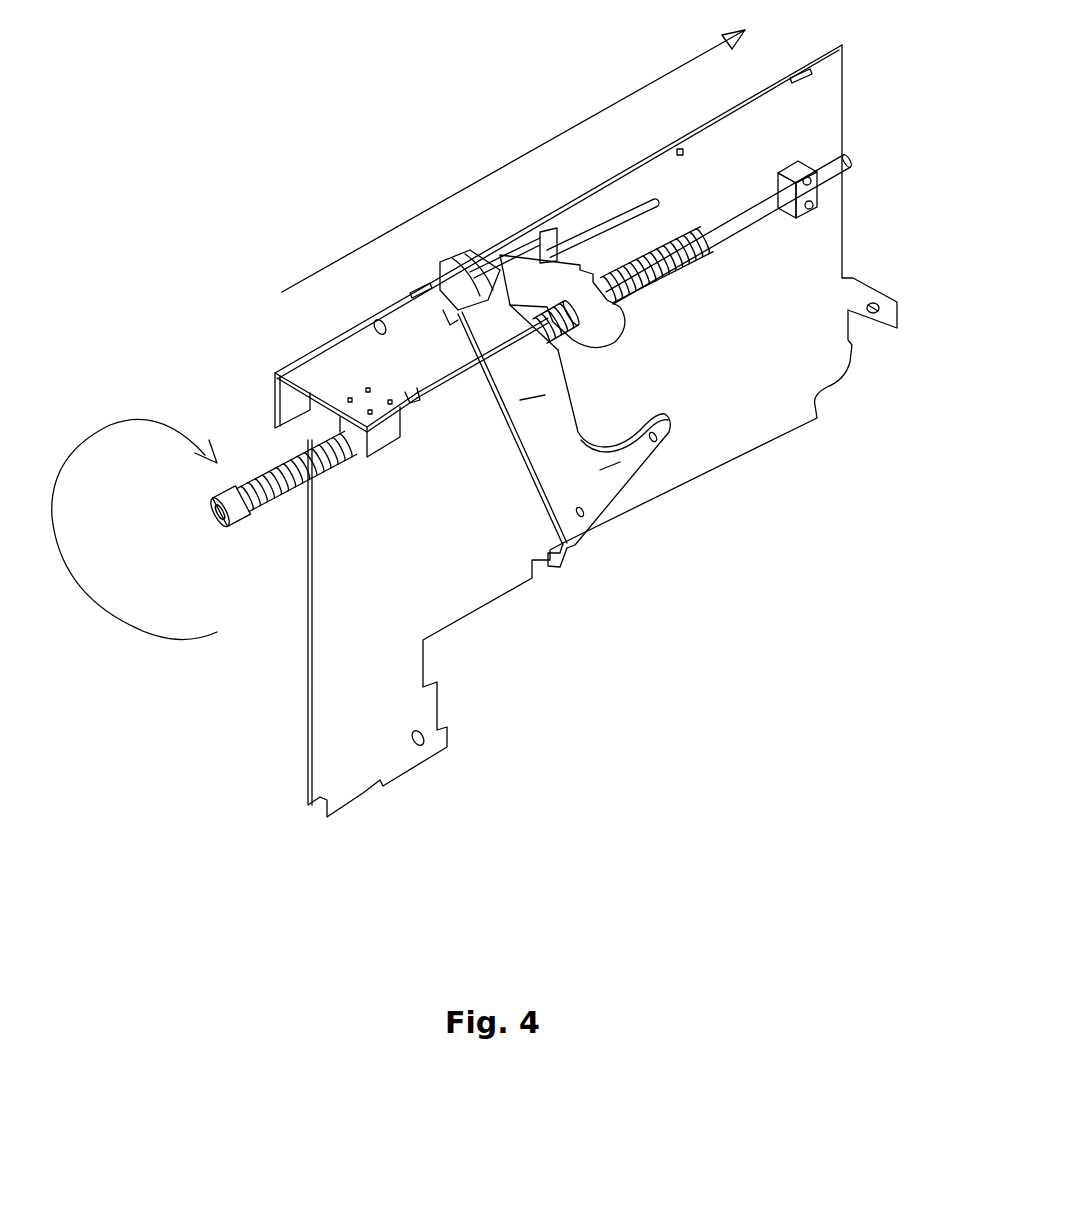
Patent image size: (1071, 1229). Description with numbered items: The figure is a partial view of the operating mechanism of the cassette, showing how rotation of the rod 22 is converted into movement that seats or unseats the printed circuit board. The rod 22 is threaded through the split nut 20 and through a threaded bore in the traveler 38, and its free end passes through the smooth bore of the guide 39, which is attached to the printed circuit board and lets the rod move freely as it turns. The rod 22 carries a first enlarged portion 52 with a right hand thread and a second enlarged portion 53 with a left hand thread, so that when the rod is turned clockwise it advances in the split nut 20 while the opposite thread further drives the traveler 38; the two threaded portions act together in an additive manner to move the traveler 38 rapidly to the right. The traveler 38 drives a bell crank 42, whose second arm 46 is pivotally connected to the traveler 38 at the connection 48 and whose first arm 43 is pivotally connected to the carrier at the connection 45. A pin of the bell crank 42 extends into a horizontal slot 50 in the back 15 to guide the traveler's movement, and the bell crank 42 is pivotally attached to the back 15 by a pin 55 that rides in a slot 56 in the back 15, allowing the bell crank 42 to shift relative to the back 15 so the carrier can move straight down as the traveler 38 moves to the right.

The back 15 is at (780, 400).
The split nut 20 is at (387, 427).
The rod 22 is at (740, 208).
The traveler 38 is at (593, 318).
The guide 39 is at (798, 168).
The bell crank 42 is at (540, 477).
The first arm 43 is at (610, 468).
The pivotal connection 45 is at (660, 443).
The second arm 46 is at (532, 405).
The pivotal connection 48 is at (452, 275).
The horizontal slot 50 is at (593, 233).
The first enlarged portion 52 is at (280, 490).
The second enlarged portion 53 is at (683, 265).
The pin 55 is at (585, 517).
The slot 56 is at (565, 533).